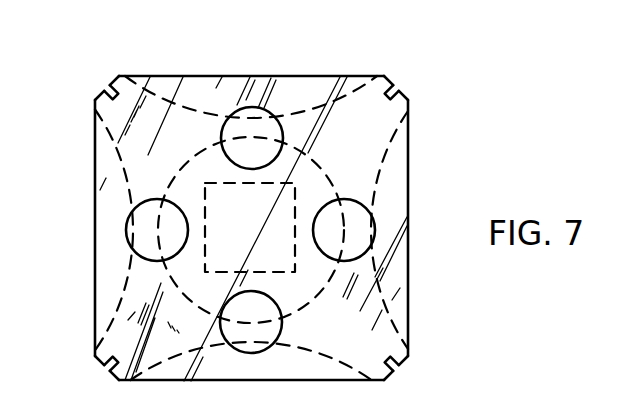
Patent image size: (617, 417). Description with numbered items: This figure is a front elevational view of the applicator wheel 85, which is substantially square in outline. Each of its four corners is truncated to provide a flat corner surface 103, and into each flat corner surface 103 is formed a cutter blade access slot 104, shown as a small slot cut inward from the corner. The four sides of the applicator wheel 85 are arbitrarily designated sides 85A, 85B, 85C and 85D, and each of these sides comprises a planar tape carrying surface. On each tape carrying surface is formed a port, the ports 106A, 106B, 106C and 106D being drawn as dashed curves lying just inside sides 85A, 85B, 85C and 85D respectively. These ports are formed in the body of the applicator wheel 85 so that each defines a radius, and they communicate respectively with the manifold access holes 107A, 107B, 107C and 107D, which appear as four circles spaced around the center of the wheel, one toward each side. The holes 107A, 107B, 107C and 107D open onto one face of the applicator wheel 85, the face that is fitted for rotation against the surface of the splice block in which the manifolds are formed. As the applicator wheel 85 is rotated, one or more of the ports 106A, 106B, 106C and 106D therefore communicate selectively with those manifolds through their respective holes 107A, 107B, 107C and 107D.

The applicator wheel 85 is at (116, 133).
The side of applicator wheel 85A is at (408, 262).
The side of applicator wheel 85B is at (176, 382).
The side of applicator wheel 85C is at (97, 310).
The side of applicator wheel 85D is at (310, 102).
The flat corner surface 103 is at (116, 79).
The cutter blade access slot 104 is at (106, 87).
The port 106A is at (397, 135).
The port 106B is at (277, 372).
The port 106C is at (97, 162).
The port 106D is at (311, 100).
The manifold access hole 107A is at (372, 212).
The manifold access hole 107B is at (283, 324).
The manifold access hole 107C is at (141, 224).
The manifold access hole 107D is at (222, 135).